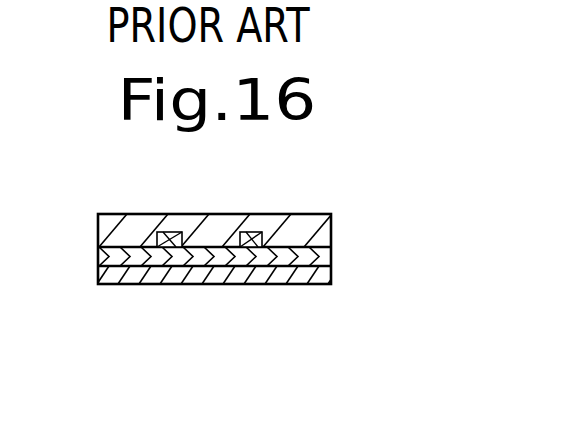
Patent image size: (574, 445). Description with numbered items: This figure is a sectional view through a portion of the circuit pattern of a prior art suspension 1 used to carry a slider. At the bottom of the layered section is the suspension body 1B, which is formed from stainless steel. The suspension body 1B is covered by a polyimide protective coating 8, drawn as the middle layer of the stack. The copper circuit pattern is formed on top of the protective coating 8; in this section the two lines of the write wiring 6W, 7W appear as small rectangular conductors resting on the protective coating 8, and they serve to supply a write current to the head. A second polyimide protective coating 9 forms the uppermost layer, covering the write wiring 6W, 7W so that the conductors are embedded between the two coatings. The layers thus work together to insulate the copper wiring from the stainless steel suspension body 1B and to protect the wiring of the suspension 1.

The suspension 1 is at (341, 215).
The suspension body 1B is at (320, 272).
The protective coating 8 is at (322, 256).
The protective coating 9 is at (297, 243).
The write wiring 6W is at (170, 235).
The write wiring 7W is at (255, 236).